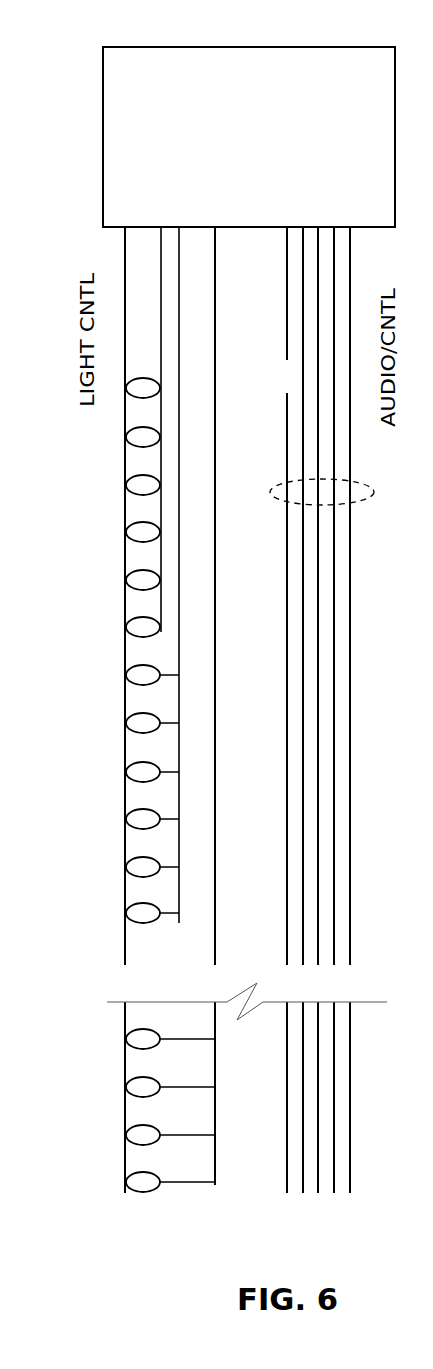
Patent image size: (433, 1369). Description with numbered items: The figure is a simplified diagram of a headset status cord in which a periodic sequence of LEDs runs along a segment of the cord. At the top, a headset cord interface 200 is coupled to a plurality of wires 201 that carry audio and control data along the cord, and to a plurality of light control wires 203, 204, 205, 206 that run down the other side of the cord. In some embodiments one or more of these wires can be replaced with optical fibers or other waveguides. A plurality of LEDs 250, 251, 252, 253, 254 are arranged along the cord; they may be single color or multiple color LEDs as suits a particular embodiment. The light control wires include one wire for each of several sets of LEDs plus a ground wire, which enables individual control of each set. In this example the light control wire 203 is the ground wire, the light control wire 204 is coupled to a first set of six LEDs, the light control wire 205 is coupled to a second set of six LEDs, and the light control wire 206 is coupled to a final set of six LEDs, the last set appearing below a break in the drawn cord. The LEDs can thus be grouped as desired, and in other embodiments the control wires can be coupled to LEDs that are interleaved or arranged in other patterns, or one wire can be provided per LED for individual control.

The headset cord interface 200 is at (222, 52).
The plurality of wires 201 is at (345, 494).
The light control wire 203 is at (125, 597).
The light control wire 204 is at (161, 465).
The light control wire 205 is at (179, 668).
The light control wire 206 is at (215, 1185).
The LED 250 is at (134, 440).
The LED 251 is at (134, 484).
The LED 252 is at (134, 672).
The LED 253 is at (134, 771).
The LED 254 is at (134, 1082).